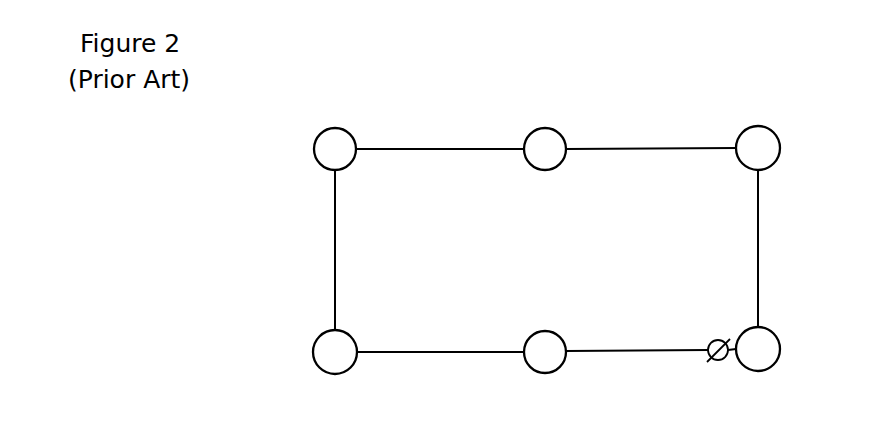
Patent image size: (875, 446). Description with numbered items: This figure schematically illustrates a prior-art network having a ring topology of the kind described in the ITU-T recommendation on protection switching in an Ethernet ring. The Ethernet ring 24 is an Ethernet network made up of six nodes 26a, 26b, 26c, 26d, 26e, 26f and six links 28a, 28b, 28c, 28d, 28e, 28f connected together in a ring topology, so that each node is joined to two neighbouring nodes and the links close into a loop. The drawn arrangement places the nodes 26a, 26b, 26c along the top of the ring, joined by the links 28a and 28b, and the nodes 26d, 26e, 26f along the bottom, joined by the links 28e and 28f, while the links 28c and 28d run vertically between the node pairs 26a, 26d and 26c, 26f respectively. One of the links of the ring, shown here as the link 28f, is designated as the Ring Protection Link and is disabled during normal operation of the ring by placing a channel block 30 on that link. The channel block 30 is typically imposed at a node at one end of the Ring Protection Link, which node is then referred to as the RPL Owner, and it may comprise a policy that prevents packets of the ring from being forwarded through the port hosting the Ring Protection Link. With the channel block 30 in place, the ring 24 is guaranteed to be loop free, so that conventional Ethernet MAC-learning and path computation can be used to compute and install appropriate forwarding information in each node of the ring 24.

The Ethernet ring 24 is at (472, 84).
The node 26a is at (343, 129).
The node 26b is at (553, 130).
The node 26c is at (772, 129).
The node 26d is at (341, 373).
The node 26e is at (552, 372).
The node 26f is at (769, 369).
The link 28a is at (408, 148).
The link 28b is at (620, 147).
The link 28c is at (334, 253).
The link 28d is at (759, 256).
The link 28e is at (424, 353).
The link 28f is at (630, 352).
The channel block 30 is at (710, 341).